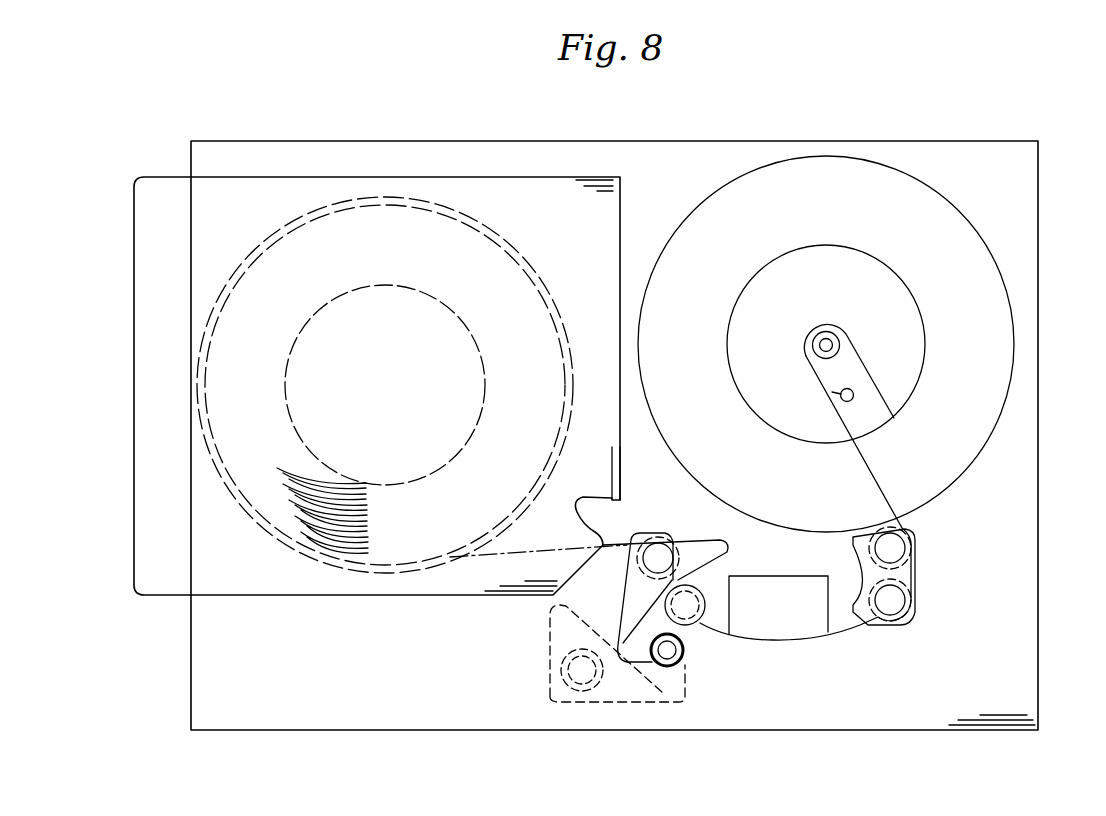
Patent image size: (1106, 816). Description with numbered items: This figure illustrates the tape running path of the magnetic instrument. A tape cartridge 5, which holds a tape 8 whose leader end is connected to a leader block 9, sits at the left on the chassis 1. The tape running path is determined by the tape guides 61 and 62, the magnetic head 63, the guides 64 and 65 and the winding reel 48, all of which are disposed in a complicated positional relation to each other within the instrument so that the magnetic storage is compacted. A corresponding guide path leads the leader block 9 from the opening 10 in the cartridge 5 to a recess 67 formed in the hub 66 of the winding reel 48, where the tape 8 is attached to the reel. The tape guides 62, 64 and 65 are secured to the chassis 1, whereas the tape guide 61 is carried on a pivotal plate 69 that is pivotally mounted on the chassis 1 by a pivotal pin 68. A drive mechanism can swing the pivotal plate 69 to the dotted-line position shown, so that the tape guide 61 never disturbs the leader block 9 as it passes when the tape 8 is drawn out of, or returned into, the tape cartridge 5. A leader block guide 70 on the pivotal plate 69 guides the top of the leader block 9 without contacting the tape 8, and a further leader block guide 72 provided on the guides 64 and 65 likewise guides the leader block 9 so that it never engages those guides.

The chassis 1 is at (1025, 652).
The tape cartridge 5 is at (135, 522).
The tape 8 is at (868, 468).
The leader block 9 is at (877, 413).
The opening 10 is at (597, 508).
The winding reel 48 is at (852, 168).
The tape guide 61 is at (658, 558).
The tape guide 62 is at (692, 610).
The magnetic head 63 is at (798, 632).
The guide 64 is at (898, 600).
The guide 65 is at (893, 548).
The hub 66 is at (880, 278).
The recess 67 is at (837, 323).
The pivotal pin 68 is at (673, 652).
The pivotal plate 69 is at (632, 658).
The leader block guide 70 is at (637, 612).
The leader block guide 72 is at (917, 568).